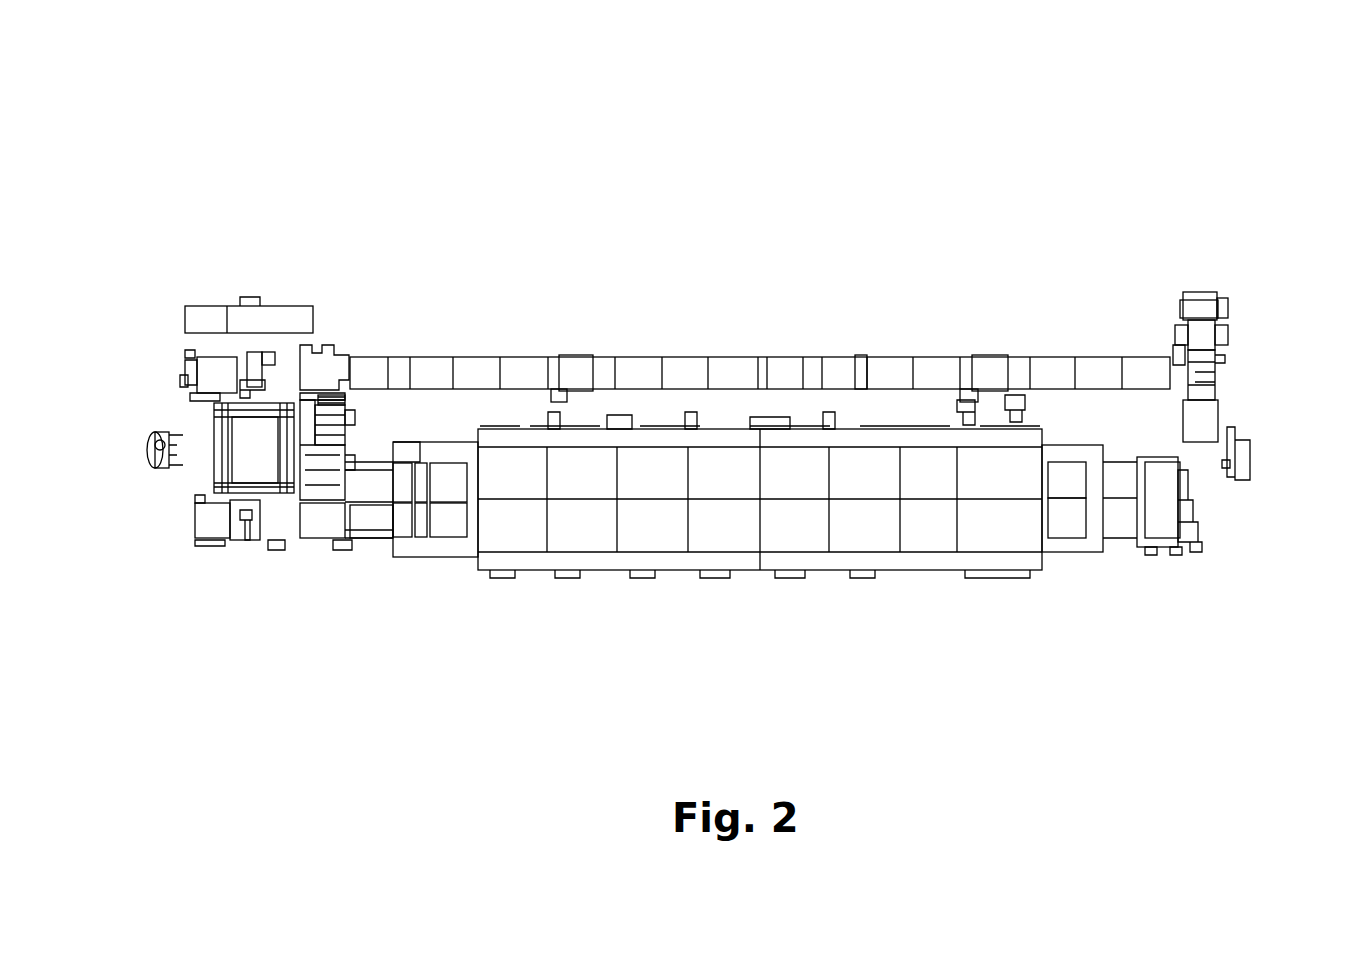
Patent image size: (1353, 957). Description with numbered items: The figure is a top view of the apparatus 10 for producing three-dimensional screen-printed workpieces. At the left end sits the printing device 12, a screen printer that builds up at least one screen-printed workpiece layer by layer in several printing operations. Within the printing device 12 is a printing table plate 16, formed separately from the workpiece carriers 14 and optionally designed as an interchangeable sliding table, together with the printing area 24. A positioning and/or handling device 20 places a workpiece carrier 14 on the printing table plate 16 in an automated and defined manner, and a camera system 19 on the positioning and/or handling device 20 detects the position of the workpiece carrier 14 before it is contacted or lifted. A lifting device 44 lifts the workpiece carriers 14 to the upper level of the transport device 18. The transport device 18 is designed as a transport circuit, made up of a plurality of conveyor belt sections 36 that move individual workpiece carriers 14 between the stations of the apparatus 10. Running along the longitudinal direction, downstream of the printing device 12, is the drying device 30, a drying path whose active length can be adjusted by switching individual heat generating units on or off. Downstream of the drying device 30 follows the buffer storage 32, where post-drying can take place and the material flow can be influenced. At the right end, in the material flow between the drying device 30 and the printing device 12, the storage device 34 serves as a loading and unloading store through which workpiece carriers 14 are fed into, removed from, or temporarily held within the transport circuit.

The apparatus 10 is at (405, 192).
The printing device 12 is at (140, 408).
The workpiece carrier 14 is at (580, 357).
The printing table plate 16 is at (247, 460).
The transport device 18 is at (480, 357).
The camera system 19 is at (236, 355).
The positioning and/or handling device 20 is at (244, 355).
The printing area 24 is at (283, 390).
The drying device 30 is at (722, 455).
The buffer storage 32 is at (1157, 483).
The storage device 34 is at (1197, 330).
The conveyor belt section 36 is at (846, 357).
The lifting device 44 is at (215, 378).